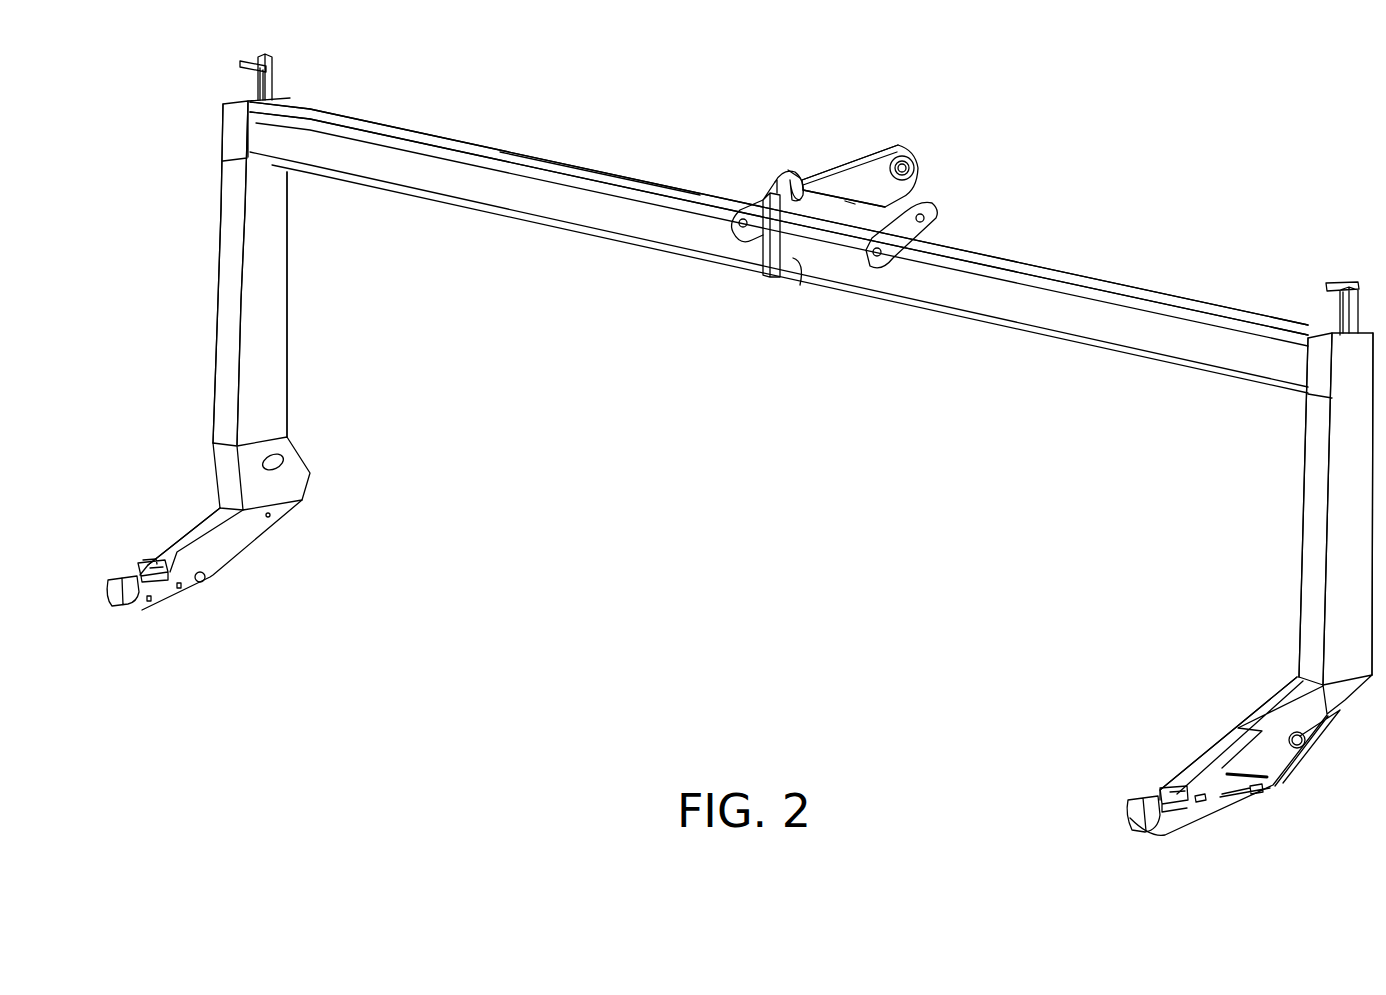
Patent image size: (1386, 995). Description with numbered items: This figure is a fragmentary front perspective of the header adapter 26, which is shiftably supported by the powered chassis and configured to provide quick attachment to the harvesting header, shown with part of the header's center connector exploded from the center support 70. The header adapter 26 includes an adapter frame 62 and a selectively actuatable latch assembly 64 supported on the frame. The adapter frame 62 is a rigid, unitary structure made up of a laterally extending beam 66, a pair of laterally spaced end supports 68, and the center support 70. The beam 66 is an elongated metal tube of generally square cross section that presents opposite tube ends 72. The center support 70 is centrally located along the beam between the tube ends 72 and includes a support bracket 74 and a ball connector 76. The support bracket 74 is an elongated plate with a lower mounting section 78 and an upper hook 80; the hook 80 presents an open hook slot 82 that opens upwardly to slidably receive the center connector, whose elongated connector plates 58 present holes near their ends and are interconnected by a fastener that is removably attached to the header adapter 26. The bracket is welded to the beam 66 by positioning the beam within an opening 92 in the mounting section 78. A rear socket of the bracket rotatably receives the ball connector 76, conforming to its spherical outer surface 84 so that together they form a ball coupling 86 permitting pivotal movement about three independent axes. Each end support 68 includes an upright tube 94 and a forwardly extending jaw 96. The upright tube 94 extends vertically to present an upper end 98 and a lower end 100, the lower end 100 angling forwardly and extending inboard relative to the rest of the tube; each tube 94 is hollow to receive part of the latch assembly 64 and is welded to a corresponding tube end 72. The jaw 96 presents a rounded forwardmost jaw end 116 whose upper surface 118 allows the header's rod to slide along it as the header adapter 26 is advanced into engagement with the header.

The header adapter 26 is at (1199, 108).
The connector plates 58 is at (735, 218).
The adapter frame 62 is at (1122, 345).
The latch assembly 64 is at (265, 70).
The beam 66 is at (585, 217).
The end supports 68 is at (278, 359).
The center support 70 is at (838, 170).
The tube ends 72 is at (208, 202).
The support bracket 74 is at (866, 170).
The ball connector 76 is at (915, 169).
The lower mounting section 78 is at (770, 262).
The upper hook 80 is at (777, 172).
The hook slot 82 is at (800, 168).
The spherical outer surface 84 is at (918, 162).
The ball coupling 86 is at (935, 174).
The opening 92 is at (793, 258).
The upright tube 94 is at (278, 267).
The jaw 96 is at (265, 540).
The upper end 98 is at (350, 216).
The lower end 100 is at (406, 470).
The jaw end 116 is at (135, 605).
The upper surface 118 is at (118, 575).